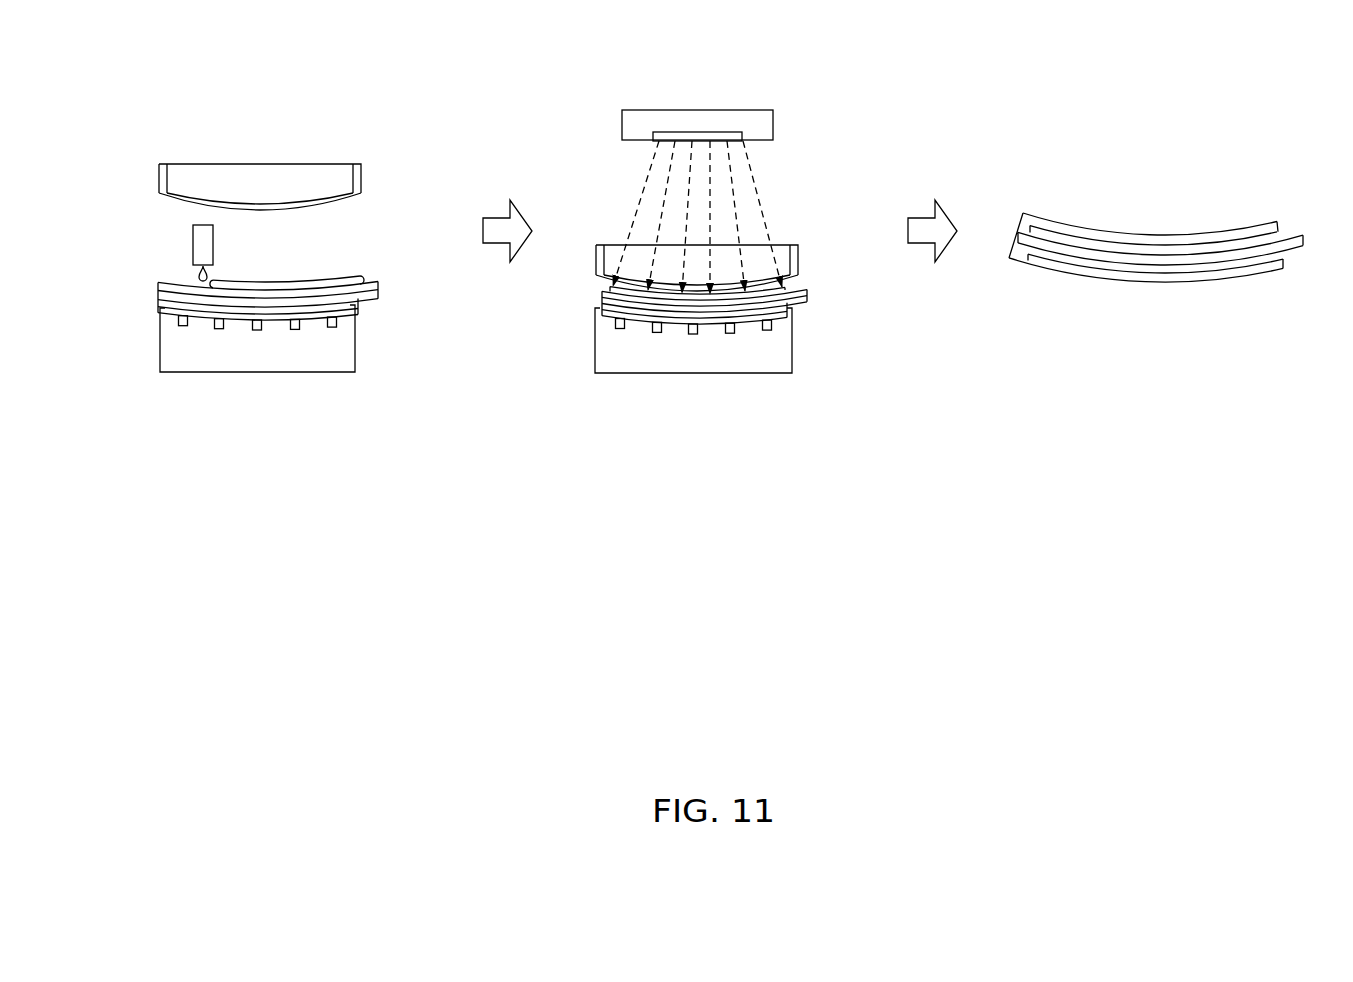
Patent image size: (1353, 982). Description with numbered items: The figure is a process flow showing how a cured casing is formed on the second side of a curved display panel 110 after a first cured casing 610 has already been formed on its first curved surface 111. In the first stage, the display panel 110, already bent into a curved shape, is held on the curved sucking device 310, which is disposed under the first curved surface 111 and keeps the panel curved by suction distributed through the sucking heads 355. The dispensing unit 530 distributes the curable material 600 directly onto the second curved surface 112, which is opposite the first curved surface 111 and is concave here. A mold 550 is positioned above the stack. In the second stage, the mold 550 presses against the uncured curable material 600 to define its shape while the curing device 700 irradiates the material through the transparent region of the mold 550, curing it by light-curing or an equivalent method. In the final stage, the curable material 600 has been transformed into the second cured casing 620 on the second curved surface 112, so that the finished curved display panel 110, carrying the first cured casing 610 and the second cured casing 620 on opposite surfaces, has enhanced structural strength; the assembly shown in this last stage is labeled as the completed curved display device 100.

The mold 550 is at (313, 173).
The dispensing unit 530 is at (197, 237).
The second curved surface 112 is at (178, 281).
The display panel 110 is at (158, 296).
The first cured casing 610 is at (161, 313).
The first curved surface 111 is at (173, 309).
The sucking heads 355 is at (295, 330).
The curved sucking device 310 is at (350, 340).
The curable material 600 is at (352, 276).
The curing device 700 is at (708, 118).
The second cured casing 620 is at (1268, 227).
The curved display device 100 is at (1097, 248).